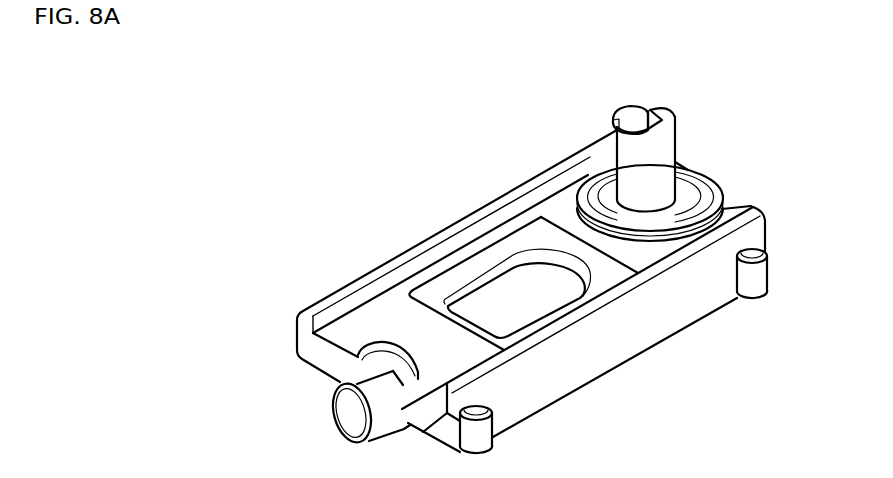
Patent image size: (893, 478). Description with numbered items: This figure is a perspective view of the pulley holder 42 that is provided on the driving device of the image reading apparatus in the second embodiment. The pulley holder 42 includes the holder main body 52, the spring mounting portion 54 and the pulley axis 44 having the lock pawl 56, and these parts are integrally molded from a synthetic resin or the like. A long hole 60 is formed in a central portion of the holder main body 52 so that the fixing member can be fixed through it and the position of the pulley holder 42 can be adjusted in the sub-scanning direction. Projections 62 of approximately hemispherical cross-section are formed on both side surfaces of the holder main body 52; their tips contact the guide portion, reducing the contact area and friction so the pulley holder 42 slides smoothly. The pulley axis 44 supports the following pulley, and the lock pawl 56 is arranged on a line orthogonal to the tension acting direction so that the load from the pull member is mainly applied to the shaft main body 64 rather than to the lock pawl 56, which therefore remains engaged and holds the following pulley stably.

The pulley holder 42 is at (238, 54).
The pulley axis 44 is at (663, 97).
The holder main body 52 is at (380, 307).
The spring mounting portion 54 is at (347, 417).
The lock pawl 56 is at (633, 117).
The long hole 60 is at (498, 308).
The projections 62 is at (485, 446).
The shaft main body 64 is at (665, 158).